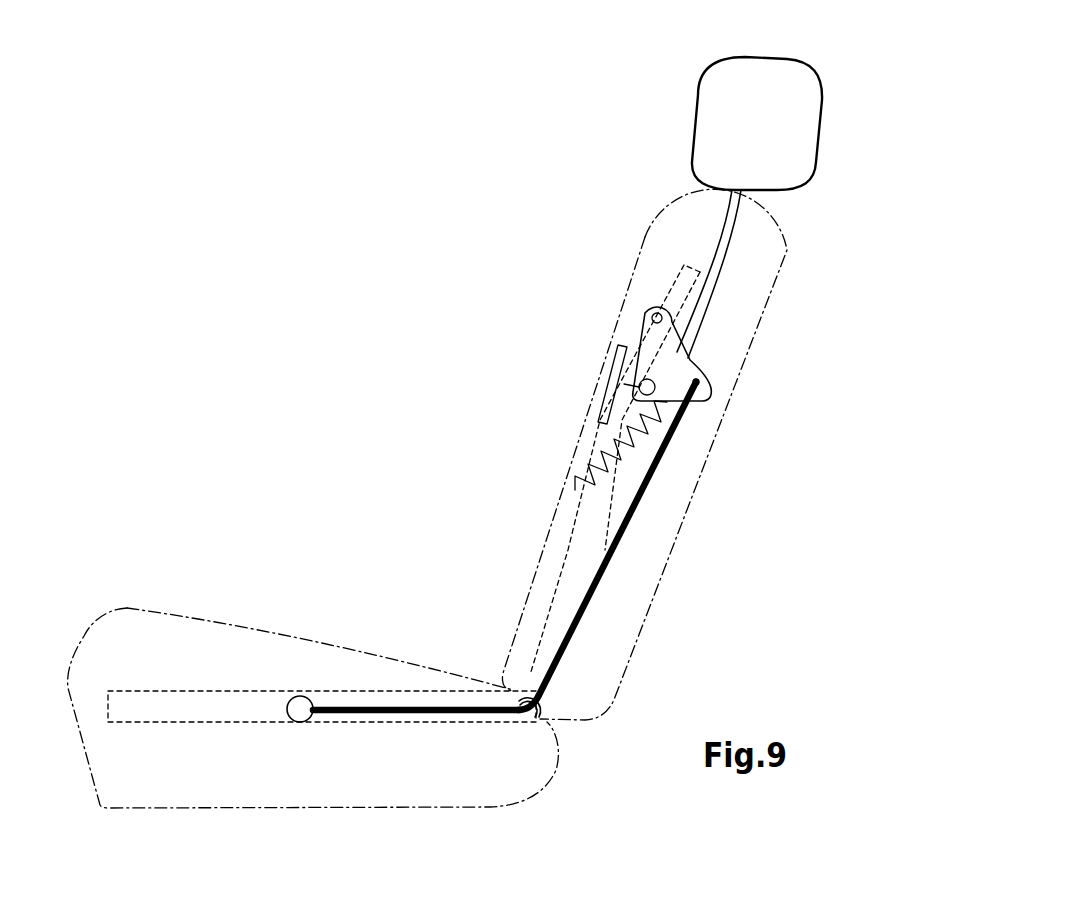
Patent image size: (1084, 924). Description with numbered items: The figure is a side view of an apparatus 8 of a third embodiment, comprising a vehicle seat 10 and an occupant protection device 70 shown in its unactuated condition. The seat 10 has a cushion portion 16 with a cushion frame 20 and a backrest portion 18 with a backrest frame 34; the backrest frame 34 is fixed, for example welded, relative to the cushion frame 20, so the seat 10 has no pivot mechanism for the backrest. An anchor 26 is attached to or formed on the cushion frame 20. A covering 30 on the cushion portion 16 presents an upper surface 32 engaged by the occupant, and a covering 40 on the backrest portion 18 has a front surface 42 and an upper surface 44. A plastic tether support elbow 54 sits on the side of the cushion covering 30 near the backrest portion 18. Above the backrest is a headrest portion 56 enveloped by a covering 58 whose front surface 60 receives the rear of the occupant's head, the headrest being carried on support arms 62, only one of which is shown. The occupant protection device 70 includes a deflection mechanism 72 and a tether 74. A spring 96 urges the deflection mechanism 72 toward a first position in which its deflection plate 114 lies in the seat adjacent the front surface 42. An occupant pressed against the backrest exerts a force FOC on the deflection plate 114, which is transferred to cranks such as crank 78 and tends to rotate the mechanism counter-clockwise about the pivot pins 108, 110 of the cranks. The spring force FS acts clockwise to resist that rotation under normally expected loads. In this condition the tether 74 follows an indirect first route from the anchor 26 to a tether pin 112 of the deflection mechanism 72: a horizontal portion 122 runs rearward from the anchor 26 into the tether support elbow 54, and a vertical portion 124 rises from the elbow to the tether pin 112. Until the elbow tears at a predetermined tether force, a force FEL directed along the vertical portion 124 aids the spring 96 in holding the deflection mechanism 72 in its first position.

The apparatus 8 is at (405, 278).
The seat 10 is at (463, 365).
The cushion portion 16 is at (205, 663).
The backrest portion 18 is at (685, 247).
The cushion frame 20 is at (168, 713).
The anchor 26 is at (290, 716).
The covering 30 is at (97, 610).
The upper surface 32 is at (300, 637).
The backrest frame 34 is at (583, 558).
The covering 40 is at (547, 537).
The front surface 42 is at (577, 437).
The upper surface 44 is at (707, 200).
The tether support elbow 54 is at (540, 711).
The headrest portion 56 is at (778, 113).
The covering 58 is at (760, 58).
The front surface 60 is at (702, 103).
The support arm 62 is at (730, 243).
The occupant protection device 70 is at (755, 388).
The deflection mechanism 72 is at (702, 410).
The tether 74 is at (585, 610).
The crank 78 is at (635, 320).
The spring 96 is at (597, 460).
The pivot pin 108 is at (657, 303).
The pivot pin 110 is at (642, 380).
The tether pin 112 is at (703, 385).
The deflection plate 114 is at (605, 355).
The horizontal portion 122 is at (372, 714).
The vertical portion 124 is at (597, 583).
The occupant exerted force FOC is at (605, 368).
The spring force FS is at (635, 477).
The elbow force FEL is at (532, 673).